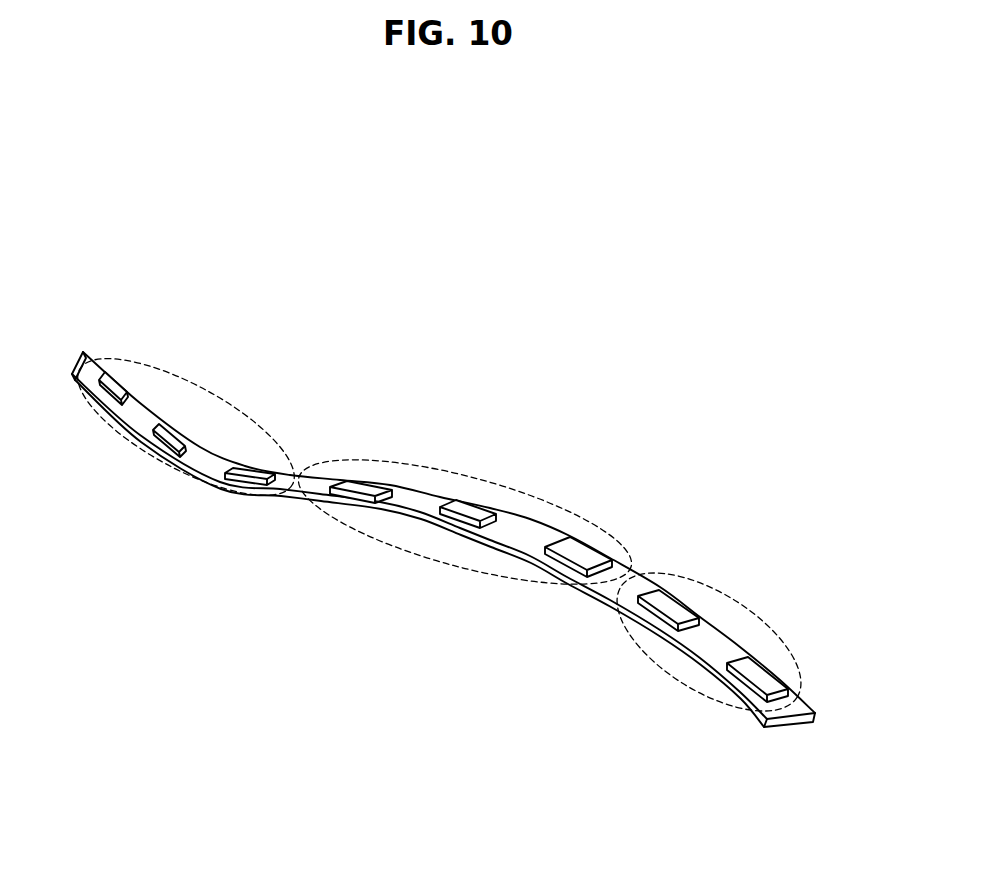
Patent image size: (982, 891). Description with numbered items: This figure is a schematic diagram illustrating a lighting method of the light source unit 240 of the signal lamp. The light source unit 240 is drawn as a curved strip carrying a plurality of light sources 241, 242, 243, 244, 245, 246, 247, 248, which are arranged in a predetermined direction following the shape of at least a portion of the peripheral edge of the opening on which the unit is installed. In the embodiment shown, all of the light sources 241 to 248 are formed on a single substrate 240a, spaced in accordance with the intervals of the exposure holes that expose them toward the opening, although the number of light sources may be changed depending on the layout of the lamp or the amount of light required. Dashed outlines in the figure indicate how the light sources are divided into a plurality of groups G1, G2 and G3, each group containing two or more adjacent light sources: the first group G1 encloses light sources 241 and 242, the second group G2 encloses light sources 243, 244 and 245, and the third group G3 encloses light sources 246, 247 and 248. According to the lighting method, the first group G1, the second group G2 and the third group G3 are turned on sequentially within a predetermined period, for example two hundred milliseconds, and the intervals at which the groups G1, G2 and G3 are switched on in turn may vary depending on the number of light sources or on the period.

The light source unit 240 is at (512, 200).
The substrate 240a is at (618, 594).
The light source 241 is at (762, 678).
The light source 242 is at (668, 610).
The light source 243 is at (578, 556).
The light source 244 is at (470, 510).
The light source 245 is at (360, 492).
The light source 246 is at (252, 476).
The light source 247 is at (170, 440).
The light source 248 is at (113, 386).
The first group G1 is at (677, 673).
The second group G2 is at (436, 564).
The third group G3 is at (130, 446).